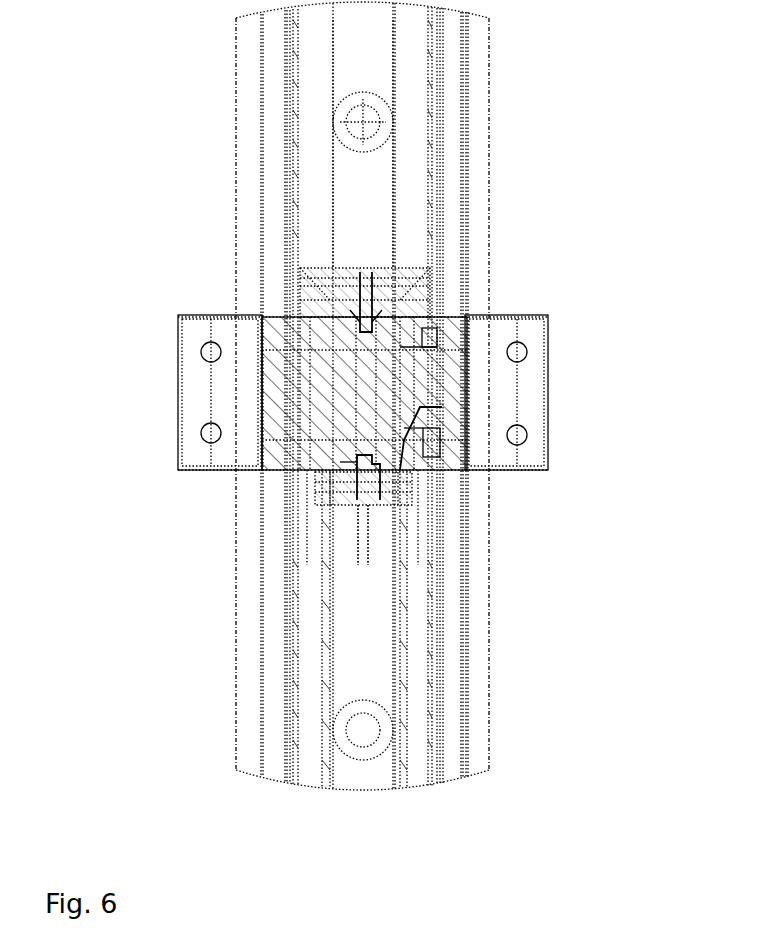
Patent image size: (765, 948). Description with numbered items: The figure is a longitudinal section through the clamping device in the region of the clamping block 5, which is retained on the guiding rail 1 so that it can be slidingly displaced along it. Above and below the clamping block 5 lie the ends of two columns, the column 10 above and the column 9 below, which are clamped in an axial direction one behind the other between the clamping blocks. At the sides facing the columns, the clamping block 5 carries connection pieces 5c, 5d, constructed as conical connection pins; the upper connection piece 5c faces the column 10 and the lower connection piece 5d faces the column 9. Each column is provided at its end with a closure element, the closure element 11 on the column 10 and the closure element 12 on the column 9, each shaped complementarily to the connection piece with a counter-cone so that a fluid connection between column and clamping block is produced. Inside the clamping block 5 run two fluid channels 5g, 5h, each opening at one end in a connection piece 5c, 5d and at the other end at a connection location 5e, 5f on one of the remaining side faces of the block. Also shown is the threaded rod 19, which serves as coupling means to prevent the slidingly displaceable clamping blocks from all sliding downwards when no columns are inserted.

The guiding rail 1 is at (252, 83).
The threaded rod 19 is at (350, 190).
The column 10 is at (405, 172).
The closure element 11 is at (402, 287).
The clamping block 5 is at (188, 377).
The connection piece 5c is at (360, 330).
The fluid channel 5h is at (400, 352).
The connection location 5e is at (447, 340).
The fluid channel 5g is at (442, 407).
The connection location 5f is at (452, 440).
The connection piece 5d is at (360, 463).
The closure element 12 is at (377, 486).
The column 9 is at (380, 531).